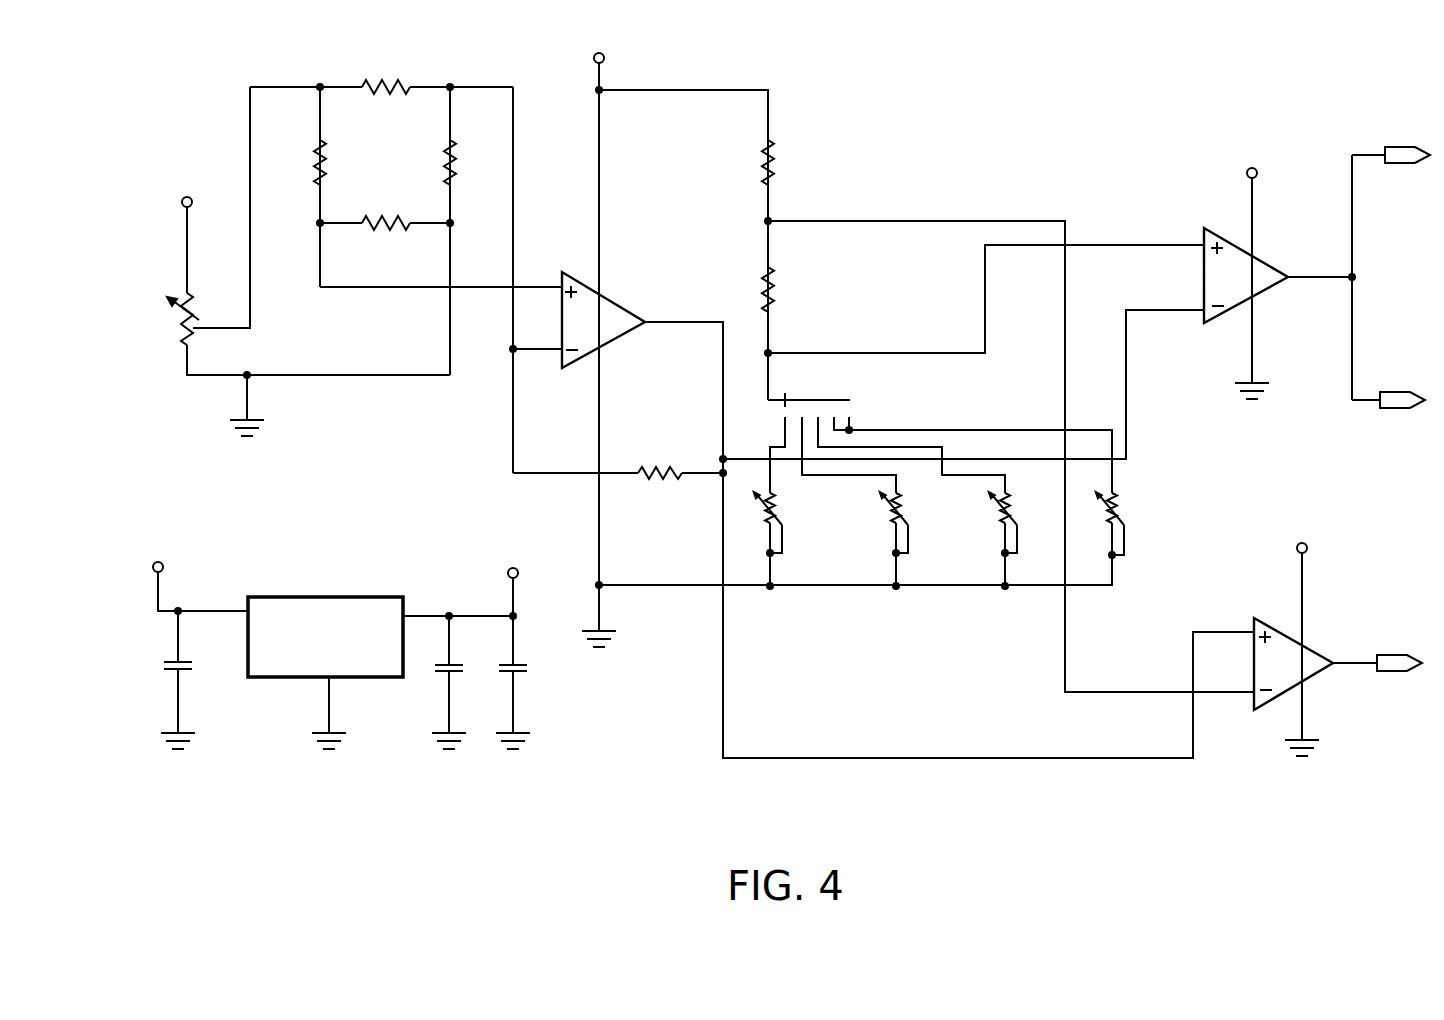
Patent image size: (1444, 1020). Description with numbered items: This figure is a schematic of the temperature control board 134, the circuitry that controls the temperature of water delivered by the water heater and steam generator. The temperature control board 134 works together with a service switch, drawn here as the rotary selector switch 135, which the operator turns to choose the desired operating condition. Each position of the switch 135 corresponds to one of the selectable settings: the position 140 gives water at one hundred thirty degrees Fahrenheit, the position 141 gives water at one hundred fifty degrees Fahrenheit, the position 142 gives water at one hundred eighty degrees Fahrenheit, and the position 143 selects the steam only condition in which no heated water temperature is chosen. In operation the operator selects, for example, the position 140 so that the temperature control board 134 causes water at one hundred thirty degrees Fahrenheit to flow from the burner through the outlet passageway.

The temperature control board 134 is at (787, 420).
The rotary selector switch S1 135 is at (958, 399).
The 130 deg. F. switch position 140 is at (782, 553).
The 150 deg. F. switch position 141 is at (908, 553).
The 180 deg. F. switch position 142 is at (1017, 553).
The steam only condition 143 is at (1124, 555).